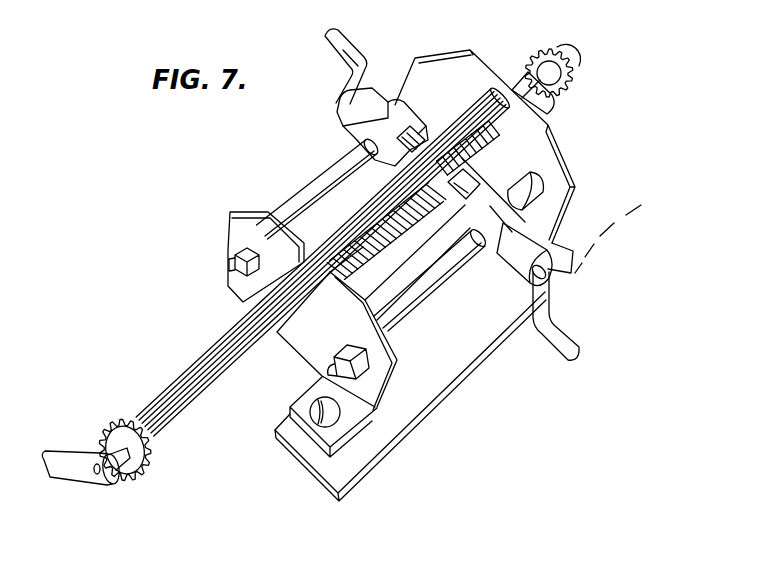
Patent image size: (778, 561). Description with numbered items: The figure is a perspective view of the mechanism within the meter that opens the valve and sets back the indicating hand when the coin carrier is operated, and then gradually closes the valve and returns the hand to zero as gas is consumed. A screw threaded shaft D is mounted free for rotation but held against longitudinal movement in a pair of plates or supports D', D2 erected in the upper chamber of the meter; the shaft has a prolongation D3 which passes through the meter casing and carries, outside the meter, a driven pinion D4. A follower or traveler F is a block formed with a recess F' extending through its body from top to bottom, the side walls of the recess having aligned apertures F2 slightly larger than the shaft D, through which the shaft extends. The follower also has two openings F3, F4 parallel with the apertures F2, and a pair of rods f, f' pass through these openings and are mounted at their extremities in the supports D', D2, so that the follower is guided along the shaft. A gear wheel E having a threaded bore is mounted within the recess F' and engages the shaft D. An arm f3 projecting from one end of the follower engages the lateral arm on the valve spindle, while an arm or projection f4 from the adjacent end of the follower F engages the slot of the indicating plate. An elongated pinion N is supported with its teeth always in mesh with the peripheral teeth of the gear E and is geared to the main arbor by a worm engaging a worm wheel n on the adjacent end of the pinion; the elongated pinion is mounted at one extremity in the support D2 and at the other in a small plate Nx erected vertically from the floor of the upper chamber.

The screw threaded shaft D is at (410, 353).
The plate or support D' is at (266, 257).
The plate or support D2 is at (563, 152).
The prolongation D3 is at (552, 101).
The driven pinion D4 is at (574, 86).
The gear wheel E is at (478, 174).
The follower or traveler F is at (514, 197).
The recess F' is at (430, 126).
The apertures F2 is at (386, 231).
The opening F3 is at (356, 137).
The opening F4 is at (512, 263).
The rod f is at (319, 188).
The rod f' is at (431, 287).
The arm f3 is at (345, 46).
The arm or projection f4 is at (552, 352).
The elongated pinion N is at (193, 376).
The worm wheel n is at (99, 424).
The small plate Nx is at (82, 478).